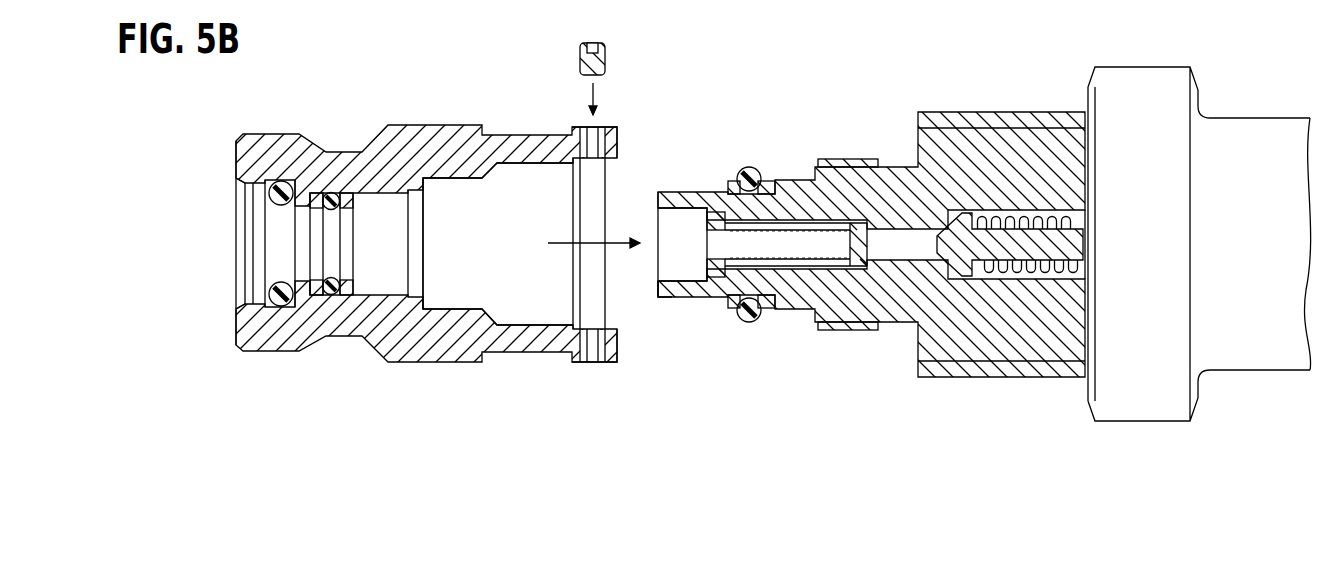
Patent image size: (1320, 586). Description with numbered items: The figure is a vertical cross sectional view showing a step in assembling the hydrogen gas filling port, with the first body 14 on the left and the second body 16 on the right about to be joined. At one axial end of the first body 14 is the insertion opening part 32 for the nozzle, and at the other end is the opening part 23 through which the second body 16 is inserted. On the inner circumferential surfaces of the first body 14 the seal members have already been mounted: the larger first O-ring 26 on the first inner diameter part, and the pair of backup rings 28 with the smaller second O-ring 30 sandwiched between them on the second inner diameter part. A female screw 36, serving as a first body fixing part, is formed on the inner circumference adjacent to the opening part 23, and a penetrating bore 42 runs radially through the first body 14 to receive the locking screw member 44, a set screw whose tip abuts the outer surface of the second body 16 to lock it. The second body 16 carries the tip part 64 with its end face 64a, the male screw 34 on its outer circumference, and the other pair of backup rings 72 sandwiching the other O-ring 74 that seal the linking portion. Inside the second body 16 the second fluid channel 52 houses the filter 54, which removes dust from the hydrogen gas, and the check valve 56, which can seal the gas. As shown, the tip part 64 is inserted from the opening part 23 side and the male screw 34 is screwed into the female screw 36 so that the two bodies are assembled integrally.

The first body 14 is at (452, 122).
The second body 16 is at (978, 108).
The opening part 23 is at (618, 158).
The first O-ring 26 is at (268, 205).
The backup rings 28 is at (316, 196).
The second O-ring 30 is at (333, 194).
The insertion opening part 32 is at (236, 303).
The male screw 34 is at (847, 159).
The female screw 36 is at (549, 312).
The penetrating bore 42 is at (590, 150).
The locking screw member 44 is at (607, 58).
The second fluid channel 52 is at (825, 246).
The filter 54 is at (787, 268).
The check valve 56 is at (1020, 252).
The tip part 64 is at (670, 298).
The end face 64a is at (658, 298).
The other backup rings 72 is at (748, 168).
The other O-ring 74 is at (749, 321).